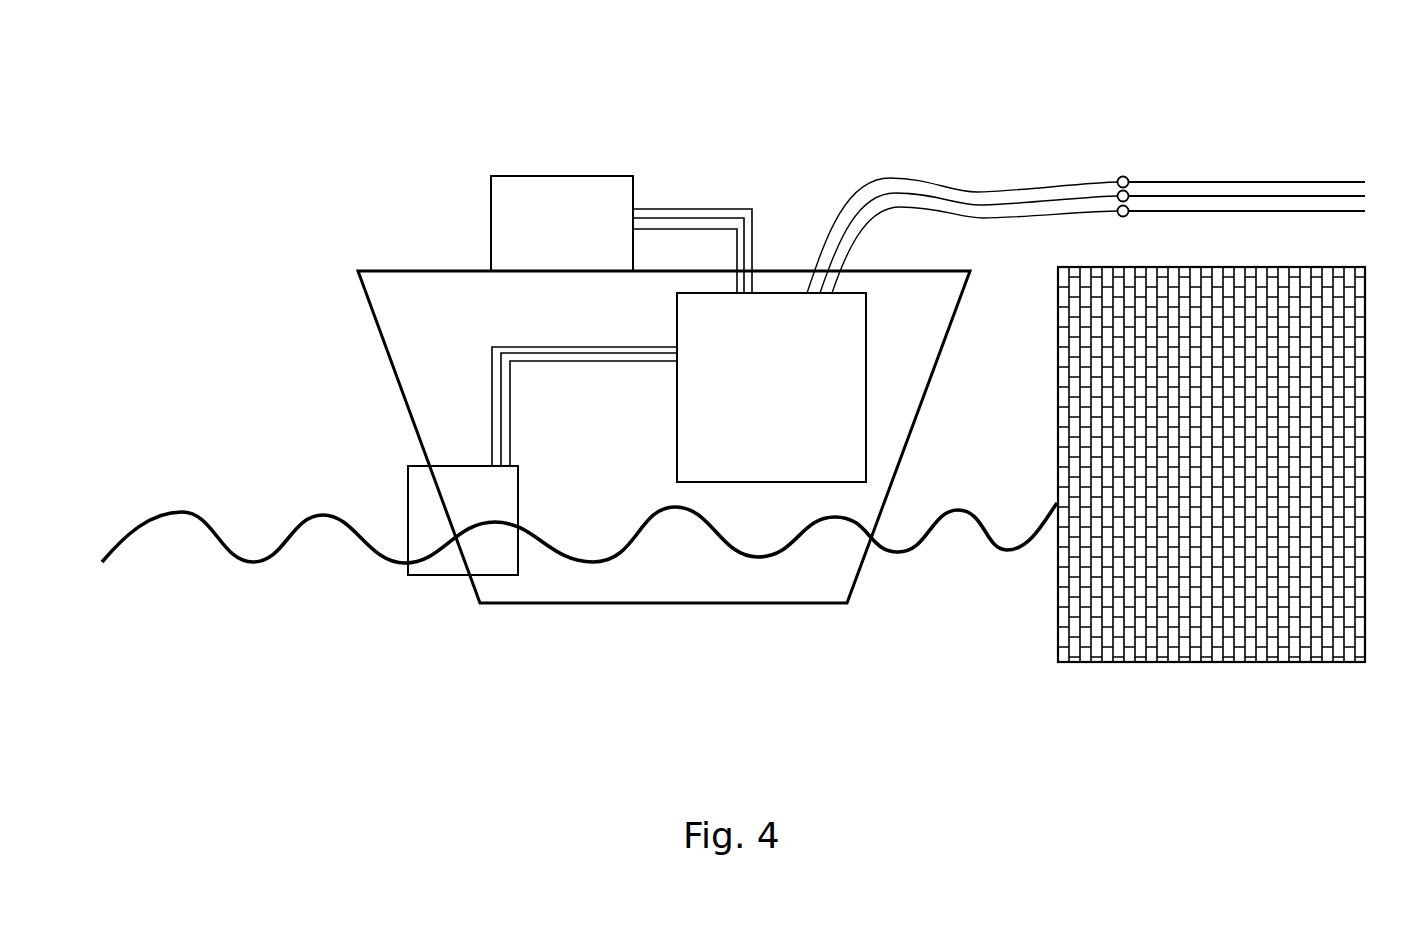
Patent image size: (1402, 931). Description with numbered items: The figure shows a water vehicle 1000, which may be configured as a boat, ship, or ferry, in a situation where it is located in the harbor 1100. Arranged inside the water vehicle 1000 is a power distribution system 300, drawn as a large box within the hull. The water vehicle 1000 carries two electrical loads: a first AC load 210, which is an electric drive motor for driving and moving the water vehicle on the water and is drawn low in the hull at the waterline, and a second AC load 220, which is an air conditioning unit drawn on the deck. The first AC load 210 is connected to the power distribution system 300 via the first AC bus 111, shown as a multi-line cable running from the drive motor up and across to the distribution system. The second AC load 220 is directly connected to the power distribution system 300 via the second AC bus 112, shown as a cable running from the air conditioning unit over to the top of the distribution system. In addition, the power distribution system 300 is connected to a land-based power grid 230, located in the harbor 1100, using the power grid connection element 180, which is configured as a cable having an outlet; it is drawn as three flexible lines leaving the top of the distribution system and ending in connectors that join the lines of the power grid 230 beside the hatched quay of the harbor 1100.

The water vehicle 1000 is at (552, 115).
The second AC load 220 is at (490, 210).
The second AC bus 112 is at (707, 207).
The power distribution system 300 is at (652, 417).
The first AC bus 111 is at (491, 348).
The first AC load 210 is at (408, 497).
The power grid connection element 180 is at (990, 190).
The power grid 230 is at (1210, 181).
The harbor 1100 is at (1057, 620).